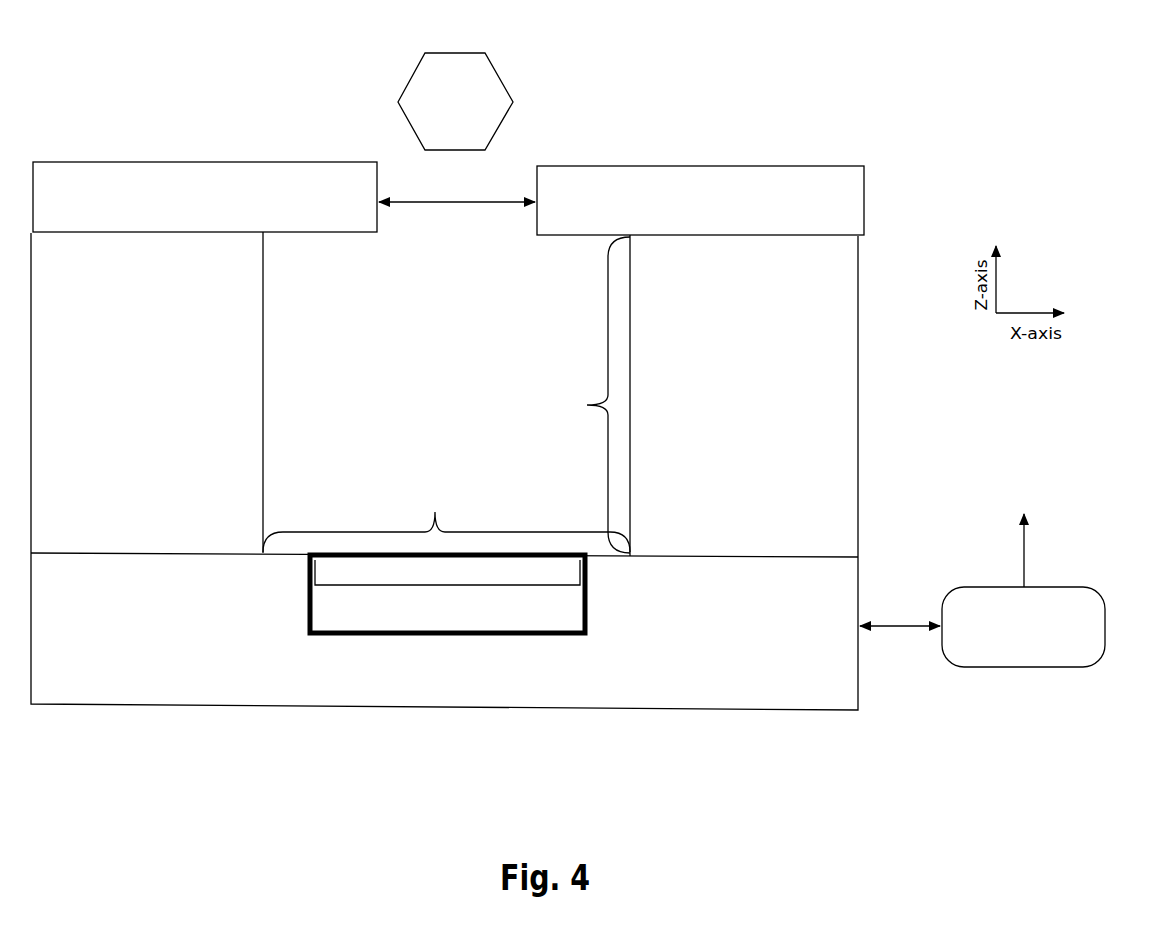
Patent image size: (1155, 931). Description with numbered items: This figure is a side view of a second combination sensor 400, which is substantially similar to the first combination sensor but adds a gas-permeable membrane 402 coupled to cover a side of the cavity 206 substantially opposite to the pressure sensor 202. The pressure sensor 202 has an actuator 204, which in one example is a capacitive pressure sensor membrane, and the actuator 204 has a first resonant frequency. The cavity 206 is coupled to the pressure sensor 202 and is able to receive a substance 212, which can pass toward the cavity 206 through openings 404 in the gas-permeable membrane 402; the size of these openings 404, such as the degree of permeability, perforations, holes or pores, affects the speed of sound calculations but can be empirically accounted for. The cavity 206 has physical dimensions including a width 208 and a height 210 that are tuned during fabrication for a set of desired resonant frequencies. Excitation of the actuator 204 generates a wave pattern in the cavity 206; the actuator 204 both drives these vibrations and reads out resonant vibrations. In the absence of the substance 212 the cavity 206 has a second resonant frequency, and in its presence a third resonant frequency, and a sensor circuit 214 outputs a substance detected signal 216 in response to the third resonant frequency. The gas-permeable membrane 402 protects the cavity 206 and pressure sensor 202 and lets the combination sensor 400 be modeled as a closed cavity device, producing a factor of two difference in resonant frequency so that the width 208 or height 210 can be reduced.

The second combination sensor 400 is at (156, 75).
The gas-permeable membrane 402 is at (222, 164).
The openings 404 is at (453, 206).
The substance 212 is at (500, 72).
The cavity 206 is at (437, 389).
The width 208 is at (466, 483).
The height 210 is at (573, 341).
The pressure sensor 202 is at (446, 639).
The actuator 204 is at (472, 574).
The sensor circuit 214 is at (1069, 587).
The substance detected signal 216 is at (1052, 479).